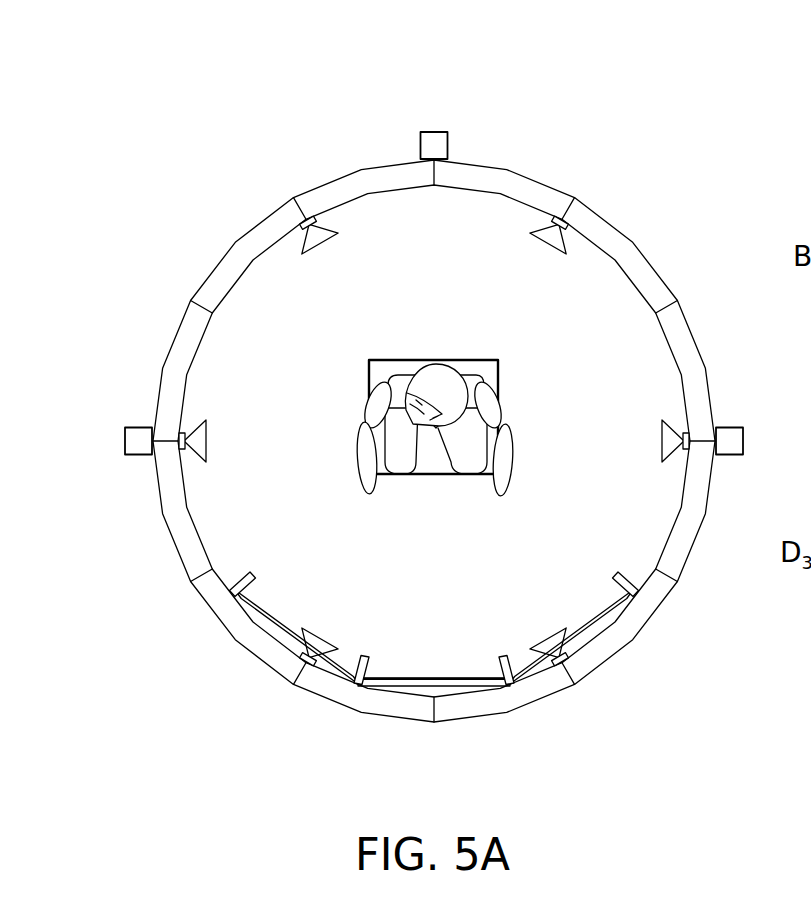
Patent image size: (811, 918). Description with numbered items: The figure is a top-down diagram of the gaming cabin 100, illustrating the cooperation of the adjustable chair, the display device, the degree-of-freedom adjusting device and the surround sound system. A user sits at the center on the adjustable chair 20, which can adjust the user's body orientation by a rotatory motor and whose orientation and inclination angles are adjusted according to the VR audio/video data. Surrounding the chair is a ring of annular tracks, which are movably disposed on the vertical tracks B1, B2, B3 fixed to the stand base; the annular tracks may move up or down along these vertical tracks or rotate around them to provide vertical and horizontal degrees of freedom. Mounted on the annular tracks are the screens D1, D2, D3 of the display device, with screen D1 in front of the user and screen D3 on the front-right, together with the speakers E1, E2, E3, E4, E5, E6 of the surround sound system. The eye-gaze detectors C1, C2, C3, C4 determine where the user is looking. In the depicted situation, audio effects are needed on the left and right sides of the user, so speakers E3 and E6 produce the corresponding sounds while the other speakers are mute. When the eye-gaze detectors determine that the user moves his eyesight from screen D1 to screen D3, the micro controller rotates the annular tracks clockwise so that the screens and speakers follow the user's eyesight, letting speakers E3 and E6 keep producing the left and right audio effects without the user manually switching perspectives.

The gaming cabin 100 is at (603, 110).
The adjustable chair 20 is at (463, 362).
The vertical track B1 is at (728, 441).
The vertical track B2 is at (434, 130).
The vertical track B3 is at (140, 441).
The eye-gaze detector C1 is at (617, 580).
The eye-gaze detector C2 is at (504, 658).
The eye-gaze detector C3 is at (366, 658).
The eye-gaze detector C4 is at (250, 580).
The screen D1 is at (601, 619).
The screen D2 is at (405, 686).
The screen D3 is at (267, 619).
The speaker E1 is at (312, 641).
The speaker E2 is at (556, 641).
The speaker E3 is at (675, 441).
The speaker E4 is at (553, 238).
The speaker E5 is at (313, 240).
The speaker E6 is at (193, 441).